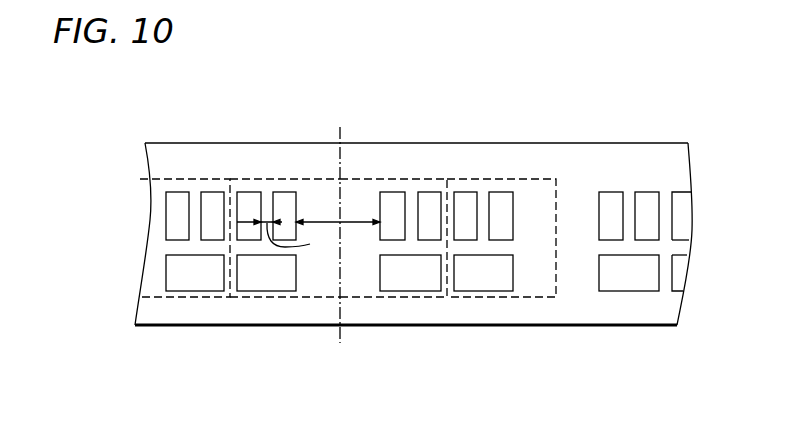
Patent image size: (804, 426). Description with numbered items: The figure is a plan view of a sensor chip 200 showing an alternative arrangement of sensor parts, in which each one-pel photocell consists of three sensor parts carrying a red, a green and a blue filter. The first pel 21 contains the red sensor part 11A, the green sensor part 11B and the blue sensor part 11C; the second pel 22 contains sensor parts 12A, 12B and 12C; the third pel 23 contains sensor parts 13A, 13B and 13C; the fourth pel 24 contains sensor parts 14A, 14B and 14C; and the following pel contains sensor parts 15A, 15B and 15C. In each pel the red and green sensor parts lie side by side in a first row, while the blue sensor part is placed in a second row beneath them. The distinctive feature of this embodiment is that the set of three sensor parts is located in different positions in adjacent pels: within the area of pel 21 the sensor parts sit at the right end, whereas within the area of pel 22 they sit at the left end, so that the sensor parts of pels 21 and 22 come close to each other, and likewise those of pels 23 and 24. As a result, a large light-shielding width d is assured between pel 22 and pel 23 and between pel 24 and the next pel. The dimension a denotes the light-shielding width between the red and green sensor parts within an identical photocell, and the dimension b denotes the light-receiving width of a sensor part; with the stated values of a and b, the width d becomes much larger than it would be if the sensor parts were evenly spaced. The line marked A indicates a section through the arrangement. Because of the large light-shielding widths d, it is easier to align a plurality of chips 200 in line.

The sensor part 11A is at (178, 202).
The sensor part 11B is at (213, 200).
The sensor part 11C is at (195, 282).
The sensor part 12A is at (249, 202).
The sensor part 12B is at (287, 198).
The sensor part 12C is at (270, 282).
The sensor part 13A is at (392, 202).
The sensor part 13B is at (426, 202).
The sensor part 13C is at (414, 283).
The sensor part 14A is at (466, 202).
The sensor part 14B is at (505, 200).
The sensor part 14C is at (480, 284).
The sensor part 15A is at (612, 200).
The sensor part 15B is at (648, 198).
The sensor part 15C is at (623, 283).
The pel 21 is at (155, 298).
The pel 22 is at (313, 298).
The pel 23 is at (387, 298).
The pel 24 is at (532, 298).
The chip 200 is at (653, 327).
The section line A-A' A is at (337, 239).
The light-shielding width a is at (295, 238).
The light-receiving width b is at (259, 212).
The light-shielding width d is at (338, 212).